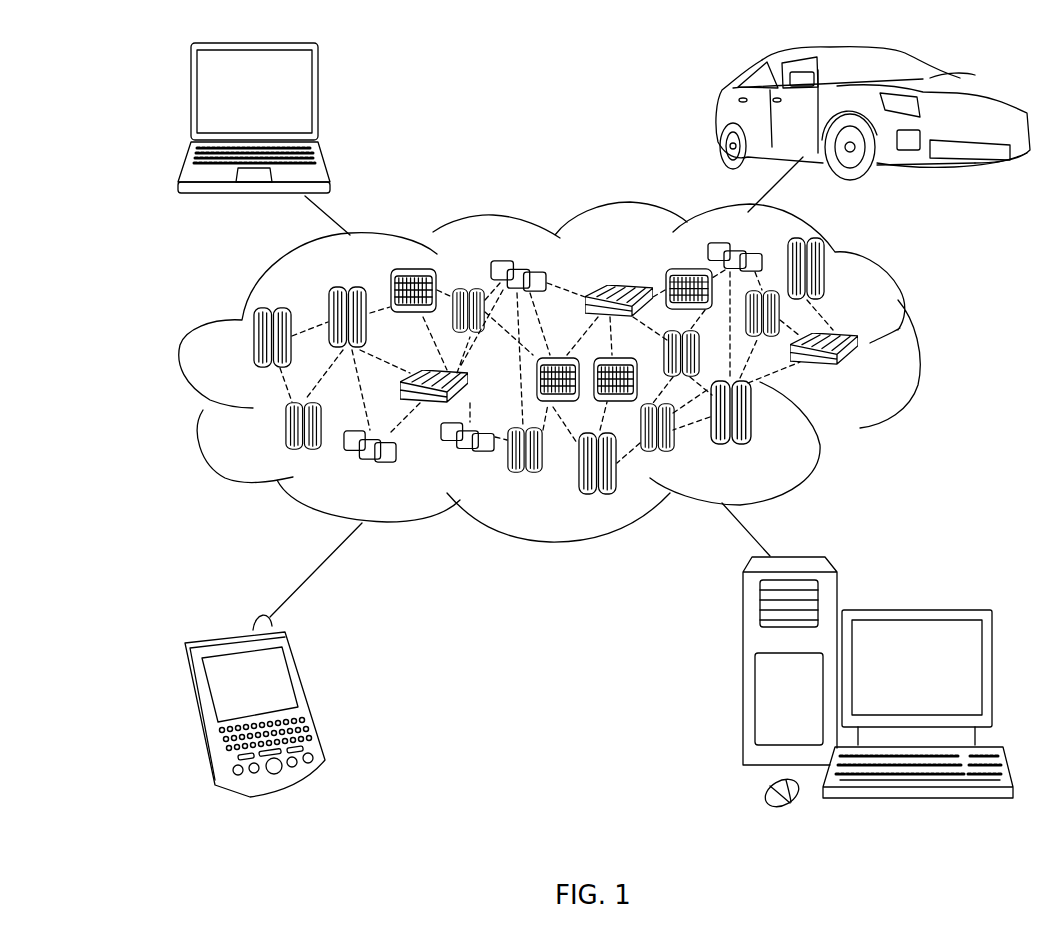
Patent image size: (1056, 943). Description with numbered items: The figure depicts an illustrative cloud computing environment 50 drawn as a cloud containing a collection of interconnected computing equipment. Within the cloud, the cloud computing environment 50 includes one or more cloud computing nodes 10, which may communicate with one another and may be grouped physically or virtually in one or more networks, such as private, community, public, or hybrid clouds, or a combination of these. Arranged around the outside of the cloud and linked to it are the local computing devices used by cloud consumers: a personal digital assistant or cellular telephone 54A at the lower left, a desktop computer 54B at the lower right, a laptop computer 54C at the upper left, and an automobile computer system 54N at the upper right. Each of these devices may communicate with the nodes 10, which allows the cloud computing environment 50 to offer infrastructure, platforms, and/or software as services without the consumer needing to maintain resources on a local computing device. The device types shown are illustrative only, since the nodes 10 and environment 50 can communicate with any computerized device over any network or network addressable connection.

The cloud computing nodes 10 is at (870, 372).
The cloud computing environment 50 is at (915, 351).
The personal digital assistant (PDA) or cellular telephone 54A is at (305, 693).
The desktop computer 54B is at (912, 610).
The laptop computer 54C is at (318, 98).
The automobile computer system 54N is at (717, 115).